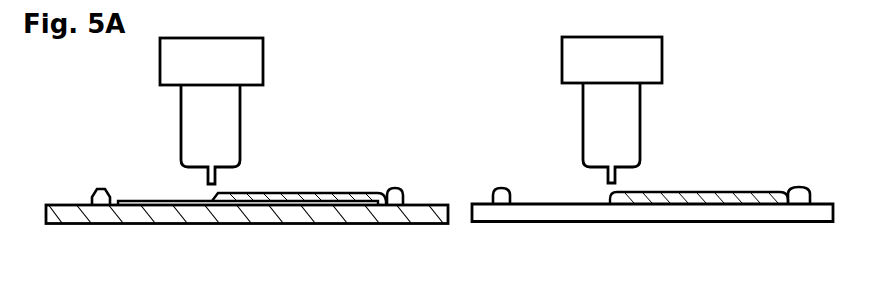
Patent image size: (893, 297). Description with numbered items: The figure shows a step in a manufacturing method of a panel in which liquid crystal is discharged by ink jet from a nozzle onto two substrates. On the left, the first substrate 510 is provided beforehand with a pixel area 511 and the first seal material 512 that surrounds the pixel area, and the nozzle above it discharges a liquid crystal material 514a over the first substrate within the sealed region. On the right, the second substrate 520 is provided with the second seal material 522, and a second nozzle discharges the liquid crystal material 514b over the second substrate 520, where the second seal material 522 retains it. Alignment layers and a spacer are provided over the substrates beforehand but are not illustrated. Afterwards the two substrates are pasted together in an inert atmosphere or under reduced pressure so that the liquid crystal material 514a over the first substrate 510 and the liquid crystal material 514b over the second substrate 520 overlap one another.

The first substrate 510 is at (113, 219).
The pixel area 511 is at (323, 204).
The first seal material 512 is at (395, 205).
The liquid crystal material 514a is at (338, 193).
The second substrate 520 is at (593, 215).
The second seal material 522 is at (793, 204).
The liquid crystal material 514b is at (747, 192).